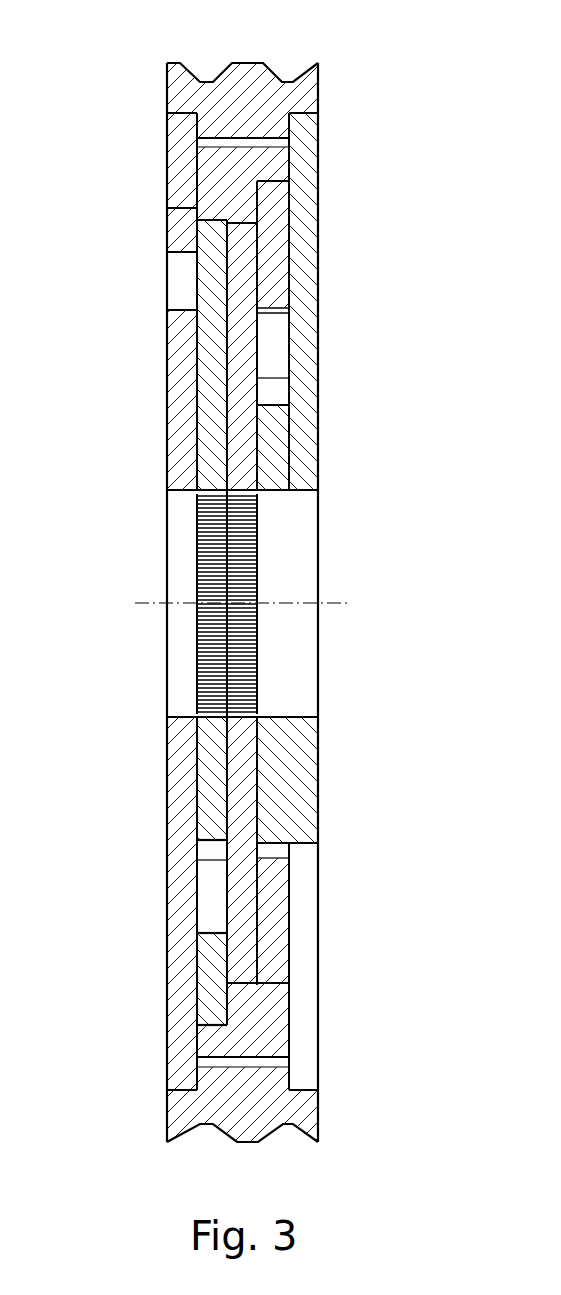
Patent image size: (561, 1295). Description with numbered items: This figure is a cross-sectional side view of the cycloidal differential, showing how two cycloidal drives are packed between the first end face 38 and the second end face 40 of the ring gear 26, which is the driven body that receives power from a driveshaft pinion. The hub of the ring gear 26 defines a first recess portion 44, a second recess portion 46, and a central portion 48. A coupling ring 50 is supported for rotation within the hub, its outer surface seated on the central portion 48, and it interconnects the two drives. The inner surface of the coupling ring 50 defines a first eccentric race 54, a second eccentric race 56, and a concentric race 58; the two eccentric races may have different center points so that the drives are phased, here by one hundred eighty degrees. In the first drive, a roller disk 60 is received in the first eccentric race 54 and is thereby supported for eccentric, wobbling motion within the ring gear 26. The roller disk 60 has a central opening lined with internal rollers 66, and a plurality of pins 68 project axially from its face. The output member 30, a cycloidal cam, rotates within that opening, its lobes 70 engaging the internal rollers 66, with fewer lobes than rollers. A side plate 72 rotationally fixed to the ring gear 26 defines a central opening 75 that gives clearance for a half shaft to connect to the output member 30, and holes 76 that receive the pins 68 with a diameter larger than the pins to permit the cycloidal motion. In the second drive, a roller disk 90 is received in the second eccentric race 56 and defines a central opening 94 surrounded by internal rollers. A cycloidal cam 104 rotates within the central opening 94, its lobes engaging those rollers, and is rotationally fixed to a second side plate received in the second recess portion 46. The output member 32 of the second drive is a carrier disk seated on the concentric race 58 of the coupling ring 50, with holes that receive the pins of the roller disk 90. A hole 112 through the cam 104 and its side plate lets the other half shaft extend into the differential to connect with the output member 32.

The ring gear 26 is at (237, 90).
The coupling ring 50 is at (257, 158).
The first end face 38 is at (166, 93).
The second end face 40 is at (318, 100).
The roller disk 90 is at (273, 200).
The central opening 94 is at (277, 319).
The holes 76 is at (183, 212).
The pins 68 is at (187, 270).
The side plate 72 is at (187, 347).
The roller disk 60 is at (213, 233).
The output member 30 is at (208, 422).
The central opening 75 is at (183, 490).
The hole 112 is at (292, 490).
The output member 32 is at (252, 757).
The cycloidal cam 104 is at (283, 813).
The lobes 70 is at (213, 838).
The internal rollers 66 is at (213, 878).
The first eccentric race 54 is at (213, 1022).
The concentric race 58 is at (240, 977).
The second eccentric race 56 is at (290, 967).
The first recess portion 44 is at (183, 1090).
The second recess portion 46 is at (303, 1090).
The central portion 48 is at (257, 1067).